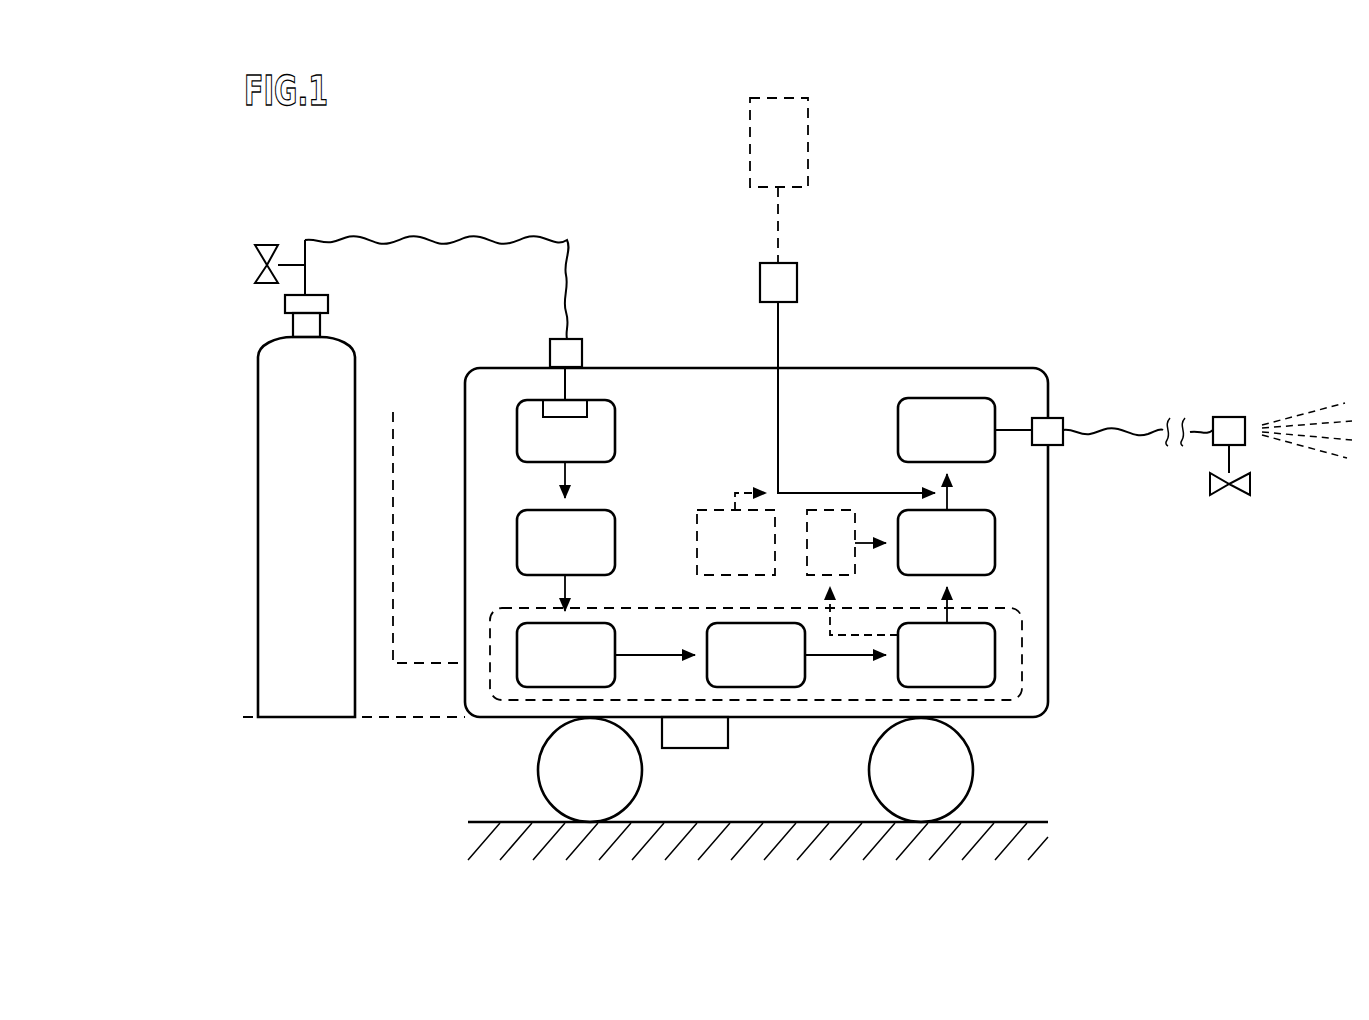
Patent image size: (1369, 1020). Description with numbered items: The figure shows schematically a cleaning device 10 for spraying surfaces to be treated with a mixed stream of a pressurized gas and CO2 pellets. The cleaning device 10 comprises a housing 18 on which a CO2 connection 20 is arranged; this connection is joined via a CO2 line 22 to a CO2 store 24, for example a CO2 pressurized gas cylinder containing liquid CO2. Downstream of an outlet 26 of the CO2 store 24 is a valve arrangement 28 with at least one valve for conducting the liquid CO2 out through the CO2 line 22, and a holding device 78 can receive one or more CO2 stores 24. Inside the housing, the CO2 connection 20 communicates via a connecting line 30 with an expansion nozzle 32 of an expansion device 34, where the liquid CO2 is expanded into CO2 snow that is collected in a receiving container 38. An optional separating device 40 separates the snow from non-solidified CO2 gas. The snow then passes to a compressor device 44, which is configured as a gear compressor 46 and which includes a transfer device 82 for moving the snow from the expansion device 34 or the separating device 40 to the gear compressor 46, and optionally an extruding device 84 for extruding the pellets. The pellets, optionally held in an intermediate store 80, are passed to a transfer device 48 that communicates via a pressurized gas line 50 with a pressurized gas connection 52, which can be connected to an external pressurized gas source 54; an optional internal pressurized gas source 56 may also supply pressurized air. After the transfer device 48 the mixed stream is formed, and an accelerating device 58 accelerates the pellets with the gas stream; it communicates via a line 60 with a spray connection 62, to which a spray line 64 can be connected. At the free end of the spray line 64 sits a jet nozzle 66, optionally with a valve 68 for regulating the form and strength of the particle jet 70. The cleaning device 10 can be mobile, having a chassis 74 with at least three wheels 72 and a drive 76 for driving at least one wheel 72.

The cleaning device 10 is at (960, 173).
The housing 18 is at (1048, 600).
The CO2 connection 20 is at (575, 352).
The CO2 line 22 is at (473, 240).
The CO2 store 24 is at (306, 515).
The outlet 26 is at (285, 300).
The valve arrangement 28 is at (255, 250).
The connecting line 30 is at (567, 383).
The expansion nozzle 32 is at (580, 418).
The expansion device 34 is at (528, 420).
The receiving container 38 is at (615, 445).
The separating device 40 is at (517, 552).
The compressor device 44 is at (1022, 668).
The gear compressor 46 is at (765, 687).
The transfer device 48 is at (995, 543).
The pressurized gas line 50 is at (780, 325).
The pressurized gas connection 52 is at (783, 275).
The external pressurized gas source 54 is at (785, 150).
The pressurized gas source 56 is at (736, 534).
The accelerating device 58 is at (950, 398).
The line 60 is at (1013, 430).
The spray connection 62 is at (1055, 420).
The spray line 64 is at (1140, 430).
The jet nozzle 66 is at (1232, 418).
The valve 68 is at (1225, 495).
The particle jet 70 is at (1310, 440).
The wheels 72 is at (643, 770).
The chassis 74 is at (501, 745).
The drive 76 is at (722, 727).
The holding device 78 is at (428, 665).
The intermediate store 80 is at (852, 572).
The transfer device 82 is at (545, 687).
The extruding device 84 is at (995, 655).